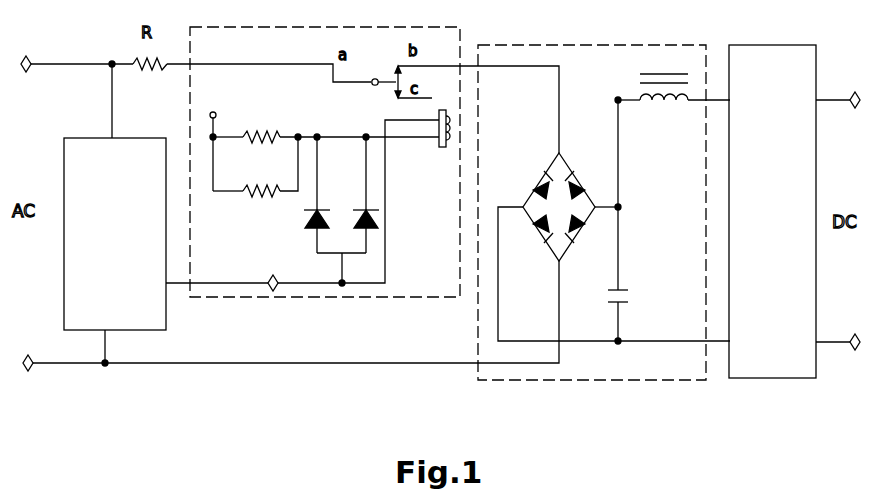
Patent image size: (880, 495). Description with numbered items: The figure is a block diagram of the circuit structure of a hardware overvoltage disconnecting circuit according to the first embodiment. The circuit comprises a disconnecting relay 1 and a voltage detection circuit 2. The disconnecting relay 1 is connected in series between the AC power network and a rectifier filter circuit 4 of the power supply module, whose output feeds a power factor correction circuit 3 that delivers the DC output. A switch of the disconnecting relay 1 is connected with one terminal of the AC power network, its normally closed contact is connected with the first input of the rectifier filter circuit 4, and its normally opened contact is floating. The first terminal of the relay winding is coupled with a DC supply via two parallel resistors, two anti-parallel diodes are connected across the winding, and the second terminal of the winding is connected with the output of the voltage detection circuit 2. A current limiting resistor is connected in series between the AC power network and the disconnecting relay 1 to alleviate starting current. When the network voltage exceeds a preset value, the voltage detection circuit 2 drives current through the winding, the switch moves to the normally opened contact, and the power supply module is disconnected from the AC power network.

The disconnecting relay 1 is at (428, 280).
The voltage detection circuit 2 is at (147, 312).
The power factor correction circuit 3 is at (788, 363).
The rectifier filter circuit 4 is at (675, 360).